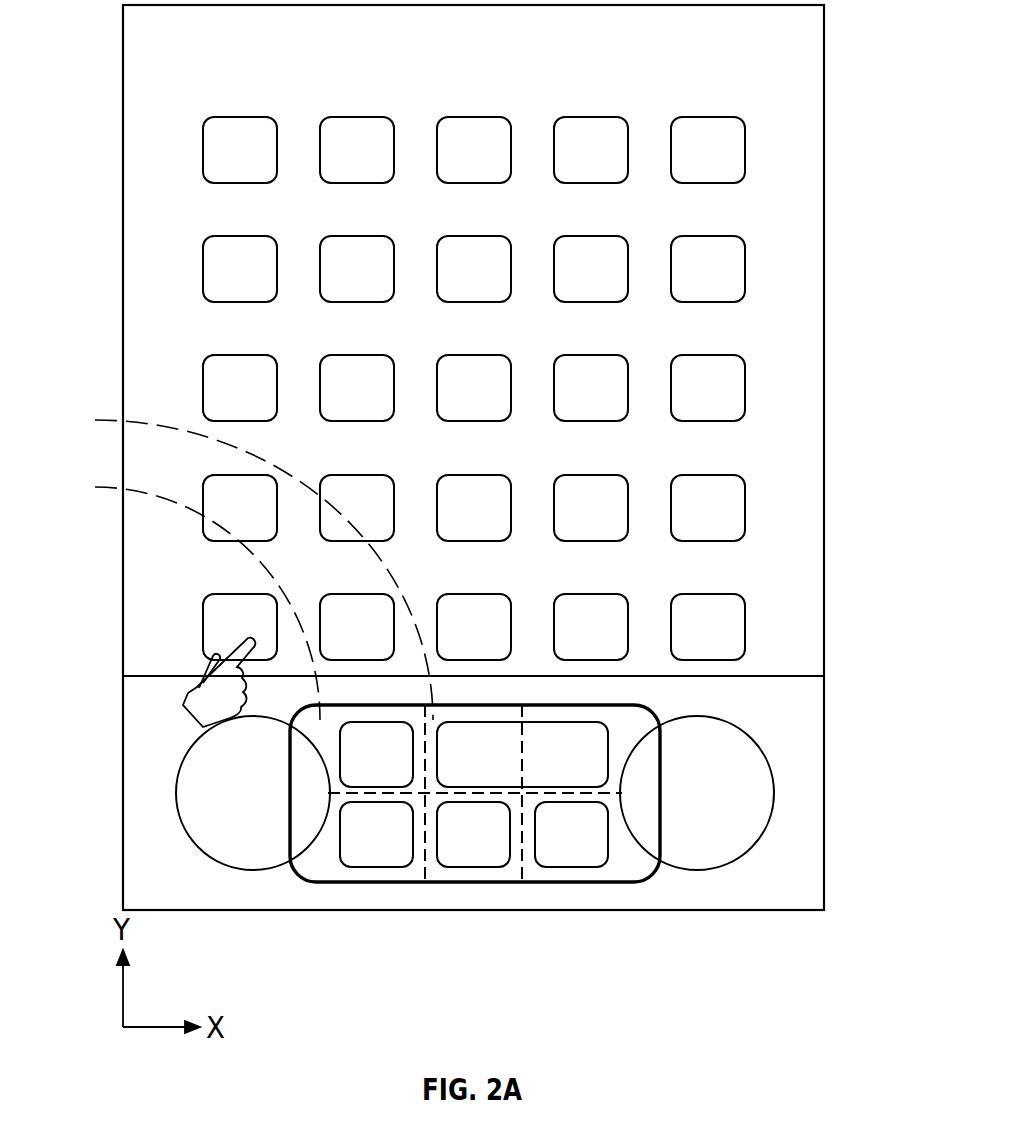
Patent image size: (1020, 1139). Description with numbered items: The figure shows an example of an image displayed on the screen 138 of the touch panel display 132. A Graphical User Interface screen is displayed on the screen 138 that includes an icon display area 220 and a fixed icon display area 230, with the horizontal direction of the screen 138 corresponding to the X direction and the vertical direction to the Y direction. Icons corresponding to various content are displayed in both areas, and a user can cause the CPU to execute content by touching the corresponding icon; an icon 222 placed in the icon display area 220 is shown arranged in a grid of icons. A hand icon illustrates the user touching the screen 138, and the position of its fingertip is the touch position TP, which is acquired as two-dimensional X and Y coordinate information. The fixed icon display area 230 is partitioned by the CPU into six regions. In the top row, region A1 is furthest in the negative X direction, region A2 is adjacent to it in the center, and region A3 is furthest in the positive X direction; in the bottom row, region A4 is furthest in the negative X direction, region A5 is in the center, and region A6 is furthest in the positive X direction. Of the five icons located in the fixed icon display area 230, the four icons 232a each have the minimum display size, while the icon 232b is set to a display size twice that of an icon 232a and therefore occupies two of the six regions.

The screen 138 is at (142, 63).
The touch panel display 132 is at (132, 195).
The icon 222 is at (233, 610).
The region A2 is at (239, 562).
The region A1 is at (185, 594).
The touch position TP is at (248, 638).
The icon display area 220 is at (806, 618).
The fixed icon display area 230 is at (650, 878).
The region A3 is at (627, 718).
The region A4 is at (320, 865).
The region A5 is at (515, 803).
The region A6 is at (627, 865).
The icon 232a is at (557, 847).
The icon 232b is at (583, 752).